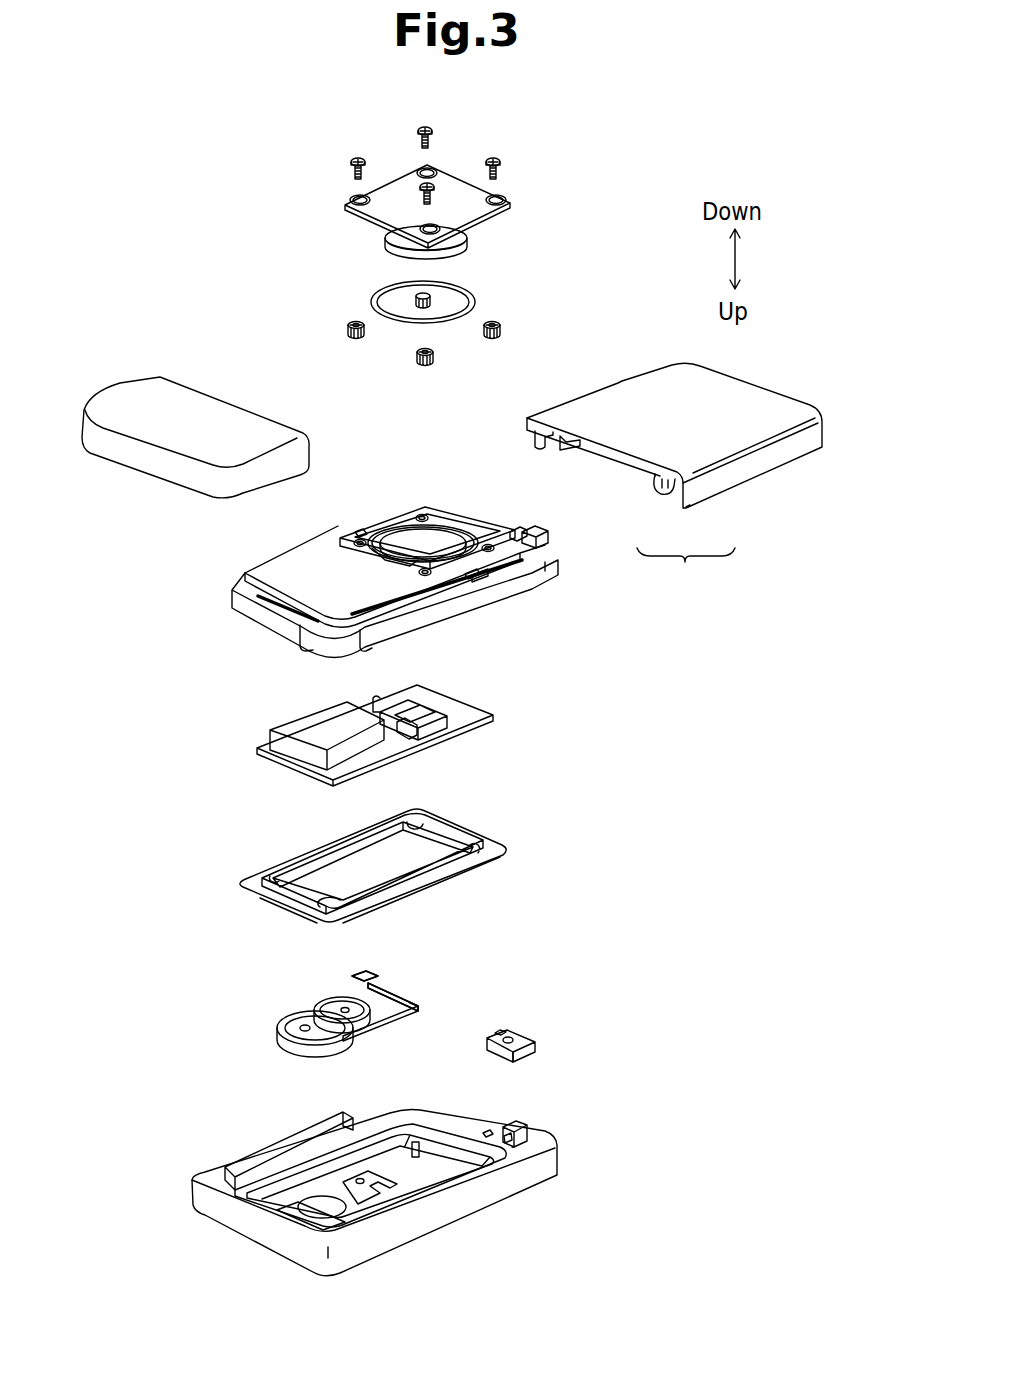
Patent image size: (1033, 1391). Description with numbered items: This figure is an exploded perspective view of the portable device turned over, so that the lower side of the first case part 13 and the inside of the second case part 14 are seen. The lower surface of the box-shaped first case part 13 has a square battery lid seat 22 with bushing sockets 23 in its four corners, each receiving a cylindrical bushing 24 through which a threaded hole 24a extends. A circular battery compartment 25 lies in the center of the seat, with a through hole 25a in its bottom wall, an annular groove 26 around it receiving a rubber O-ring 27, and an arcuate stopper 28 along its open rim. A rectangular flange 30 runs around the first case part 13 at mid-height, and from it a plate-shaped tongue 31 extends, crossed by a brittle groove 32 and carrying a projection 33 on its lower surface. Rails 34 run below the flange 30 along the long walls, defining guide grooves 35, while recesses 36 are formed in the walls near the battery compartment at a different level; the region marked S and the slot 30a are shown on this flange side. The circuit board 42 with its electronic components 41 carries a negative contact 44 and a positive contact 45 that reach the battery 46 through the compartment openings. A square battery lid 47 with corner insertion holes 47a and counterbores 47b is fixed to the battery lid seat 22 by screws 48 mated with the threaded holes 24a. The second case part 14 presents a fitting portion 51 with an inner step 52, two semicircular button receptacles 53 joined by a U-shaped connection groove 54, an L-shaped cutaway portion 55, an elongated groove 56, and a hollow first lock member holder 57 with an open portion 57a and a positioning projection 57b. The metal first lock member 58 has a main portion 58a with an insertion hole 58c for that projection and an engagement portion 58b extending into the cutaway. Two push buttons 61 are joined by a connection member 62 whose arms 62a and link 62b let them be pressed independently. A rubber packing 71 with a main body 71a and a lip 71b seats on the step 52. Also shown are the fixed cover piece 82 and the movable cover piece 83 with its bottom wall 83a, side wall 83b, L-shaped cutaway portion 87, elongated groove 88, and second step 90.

The first case part 13 is at (236, 574).
The second case part 14 is at (173, 1168).
The battery lid seat 22 is at (347, 527).
The bushing sockets 23 is at (422, 514).
The bushing 24 is at (346, 330).
The threaded hole 24a is at (353, 321).
The battery compartment 25 is at (450, 540).
The through hole 25a is at (413, 557).
The annular groove 26 is at (382, 552).
The O-ring 27 is at (465, 281).
The stopper 28 is at (367, 540).
The flange 30 is at (263, 614).
The slot 30a is at (235, 590).
The tongue 31 is at (540, 530).
The groove 32 is at (545, 556).
The projection 33 is at (518, 528).
The rails 34 is at (357, 530).
The guide groove 35 is at (488, 576).
The recesses 36 is at (306, 642).
The electronic components 41 is at (300, 724).
The circuit board 42 is at (465, 710).
The negative contact 44 is at (412, 696).
The positive contact 45 is at (410, 735).
The battery 46 is at (469, 243).
The battery lid 47 is at (477, 210).
The insertion holes 47a is at (435, 170).
The counterbore 47b is at (423, 173).
The screws 48 is at (424, 127).
The fitting portion 51 is at (420, 1126).
The step 52 is at (387, 1140).
The button receptacles 53 is at (333, 1203).
The connection groove 54 is at (382, 1188).
The cutaway portion 55 is at (508, 1125).
The elongated groove 56 is at (260, 1162).
The first lock member holder 57 is at (529, 1133).
The open portion 57a is at (487, 1133).
The positioning projection 57b is at (512, 1148).
The first lock member 58 is at (583, 1012).
The main portion 58a is at (525, 1040).
The engagement portion 58b is at (500, 1034).
The insertion hole 58c is at (523, 1050).
The push buttons 61 is at (303, 1003).
The connection member 62 is at (373, 922).
The arms 62a is at (360, 977).
The link 62b is at (400, 990).
The packing 71 is at (570, 820).
The main body 71a is at (512, 873).
The lip 71b is at (465, 824).
The fixed cover piece 82 is at (127, 393).
The movable cover piece 83 is at (686, 568).
The bottom wall 83a is at (645, 484).
The side wall 83b is at (710, 490).
The cutaway portion 87 is at (740, 373).
The elongated groove 88 is at (538, 443).
The second step 90 is at (663, 472).
The space S is at (422, 622).